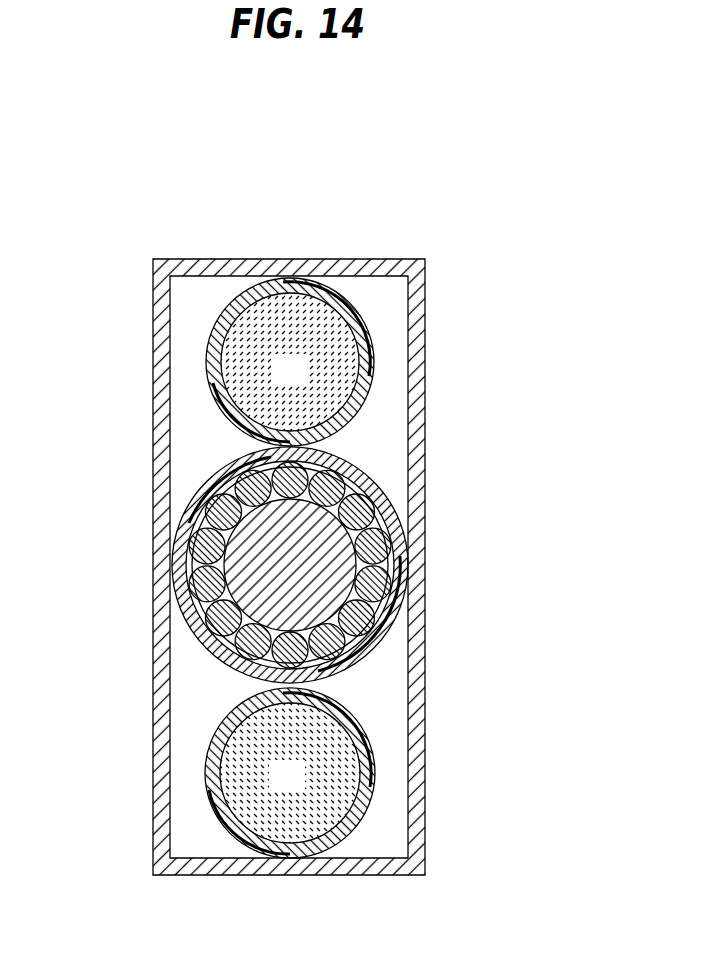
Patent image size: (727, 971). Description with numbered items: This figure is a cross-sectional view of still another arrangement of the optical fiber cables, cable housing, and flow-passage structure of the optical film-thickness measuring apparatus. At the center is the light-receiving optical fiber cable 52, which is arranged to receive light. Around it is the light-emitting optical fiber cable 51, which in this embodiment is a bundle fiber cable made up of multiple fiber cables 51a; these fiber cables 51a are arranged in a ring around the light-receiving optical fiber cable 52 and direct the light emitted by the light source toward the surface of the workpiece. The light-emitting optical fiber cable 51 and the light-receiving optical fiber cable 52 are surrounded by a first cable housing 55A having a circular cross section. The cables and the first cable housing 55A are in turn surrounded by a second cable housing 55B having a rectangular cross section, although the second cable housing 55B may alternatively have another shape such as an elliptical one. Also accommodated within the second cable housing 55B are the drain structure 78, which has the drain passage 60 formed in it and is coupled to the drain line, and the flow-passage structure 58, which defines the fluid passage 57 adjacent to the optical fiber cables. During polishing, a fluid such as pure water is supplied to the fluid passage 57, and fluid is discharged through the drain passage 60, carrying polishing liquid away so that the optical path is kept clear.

The second cable housing 55B is at (200, 258).
The first cable housing 55A is at (363, 475).
The drain structure 78 is at (355, 300).
The drain passage 60 is at (339, 302).
The light-emitting optical fiber cable 51 is at (296, 552).
The fiber cables 51a is at (250, 488).
The light-receiving optical fiber cable 52 is at (303, 557).
The fluid passage 57 is at (217, 795).
The flow-passage structure 58 is at (207, 790).